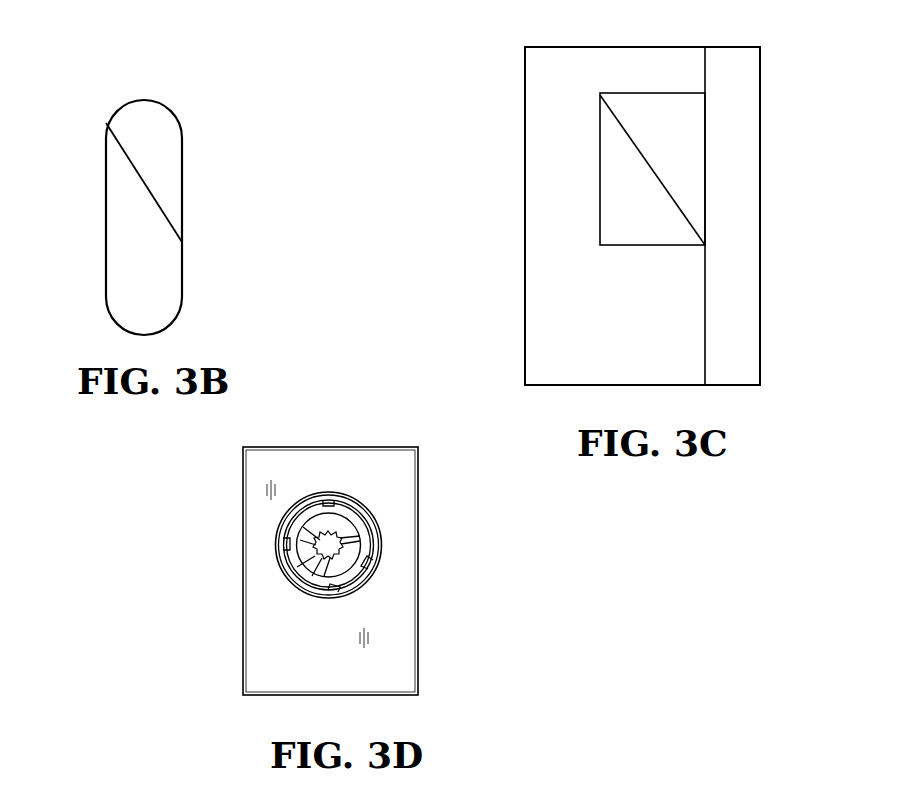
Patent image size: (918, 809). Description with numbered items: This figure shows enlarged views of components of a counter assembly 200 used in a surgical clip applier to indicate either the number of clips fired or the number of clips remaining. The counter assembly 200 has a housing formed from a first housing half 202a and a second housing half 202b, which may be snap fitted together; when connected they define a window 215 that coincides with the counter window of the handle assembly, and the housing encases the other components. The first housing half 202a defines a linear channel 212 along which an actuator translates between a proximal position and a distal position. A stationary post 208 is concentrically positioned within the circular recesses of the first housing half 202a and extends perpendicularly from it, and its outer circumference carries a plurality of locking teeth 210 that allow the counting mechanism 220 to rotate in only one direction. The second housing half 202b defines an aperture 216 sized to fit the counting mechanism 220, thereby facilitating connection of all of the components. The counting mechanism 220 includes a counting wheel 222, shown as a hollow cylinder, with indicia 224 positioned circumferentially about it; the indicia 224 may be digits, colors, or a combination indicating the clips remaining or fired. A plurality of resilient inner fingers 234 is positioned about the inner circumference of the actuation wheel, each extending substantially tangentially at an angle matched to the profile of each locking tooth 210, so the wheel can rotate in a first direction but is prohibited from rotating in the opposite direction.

In FIG. 3C, the counter assembly 200 is at (518, 75).
In FIG. 3C, the first housing half 202a is at (524, 162).
In FIG. 3C, the second housing half 202b is at (762, 182).
In FIG. 3D, the second housing half 202b is at (420, 452).
In FIG. 3D, the stationary post 208 is at (315, 563).
In FIG. 3D, the locking teeth 210 is at (326, 538).
In FIG. 3B, the linear channel 212 is at (144, 167).
In FIG. 3C, the window 215 is at (705, 93).
In FIG. 3D, the aperture 216 is at (377, 527).
In FIG. 3D, the counting mechanism 220 is at (318, 540).
In FIG. 3B, the counting wheel 222 is at (183, 216).
In FIG. 3C, the counting wheel 222 is at (617, 233).
In FIG. 3B, the indicia 224 is at (120, 260).
In FIG. 3C, the indicia 224 is at (663, 220).
In FIG. 3D, the inner fingers 234 is at (312, 500).